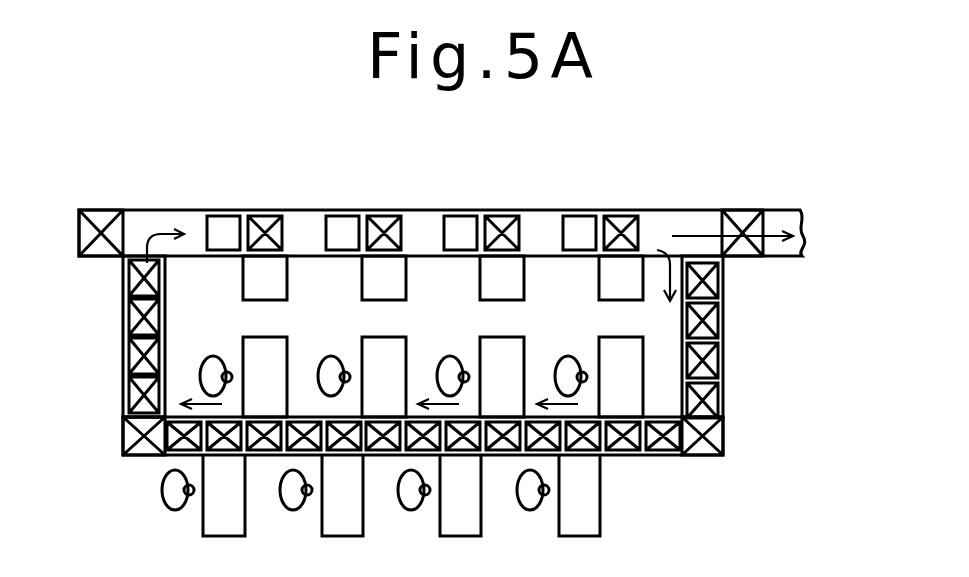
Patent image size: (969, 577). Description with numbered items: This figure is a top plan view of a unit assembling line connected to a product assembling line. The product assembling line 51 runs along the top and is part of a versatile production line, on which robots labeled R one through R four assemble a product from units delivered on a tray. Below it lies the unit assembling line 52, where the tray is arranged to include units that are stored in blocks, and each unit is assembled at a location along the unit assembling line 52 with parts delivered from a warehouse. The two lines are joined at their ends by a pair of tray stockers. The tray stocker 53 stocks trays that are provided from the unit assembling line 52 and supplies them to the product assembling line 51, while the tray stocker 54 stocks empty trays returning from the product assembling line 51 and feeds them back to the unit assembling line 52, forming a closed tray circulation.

The product assembling line 51 is at (850, 205).
The unit assembling line 52 is at (797, 387).
The tray stocker 53 is at (98, 282).
The tray stocker 54 is at (753, 282).